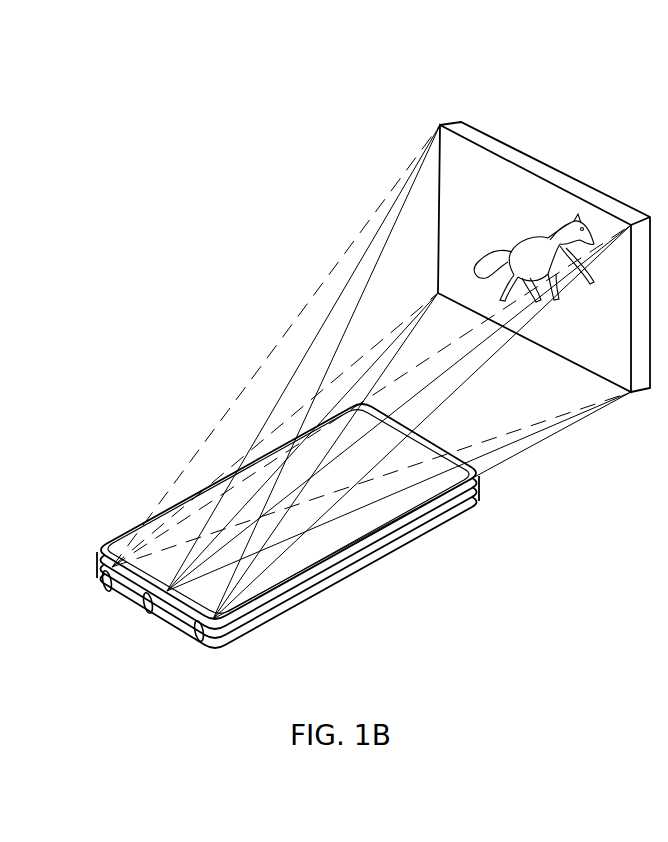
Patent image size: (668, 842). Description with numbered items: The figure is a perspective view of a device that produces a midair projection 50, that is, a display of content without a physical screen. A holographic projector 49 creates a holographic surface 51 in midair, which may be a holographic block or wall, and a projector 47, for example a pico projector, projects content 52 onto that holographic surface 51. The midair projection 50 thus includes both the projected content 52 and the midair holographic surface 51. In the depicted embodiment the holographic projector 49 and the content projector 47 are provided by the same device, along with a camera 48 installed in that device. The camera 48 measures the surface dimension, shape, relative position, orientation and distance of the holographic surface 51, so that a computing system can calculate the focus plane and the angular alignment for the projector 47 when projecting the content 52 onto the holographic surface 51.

The projector for projecting content 47 is at (194, 624).
The camera 48 is at (144, 603).
The holographic projector 49 is at (103, 582).
The midair projection 50 is at (371, 114).
The holographic surface 51 is at (463, 150).
The projected content 52 is at (532, 256).